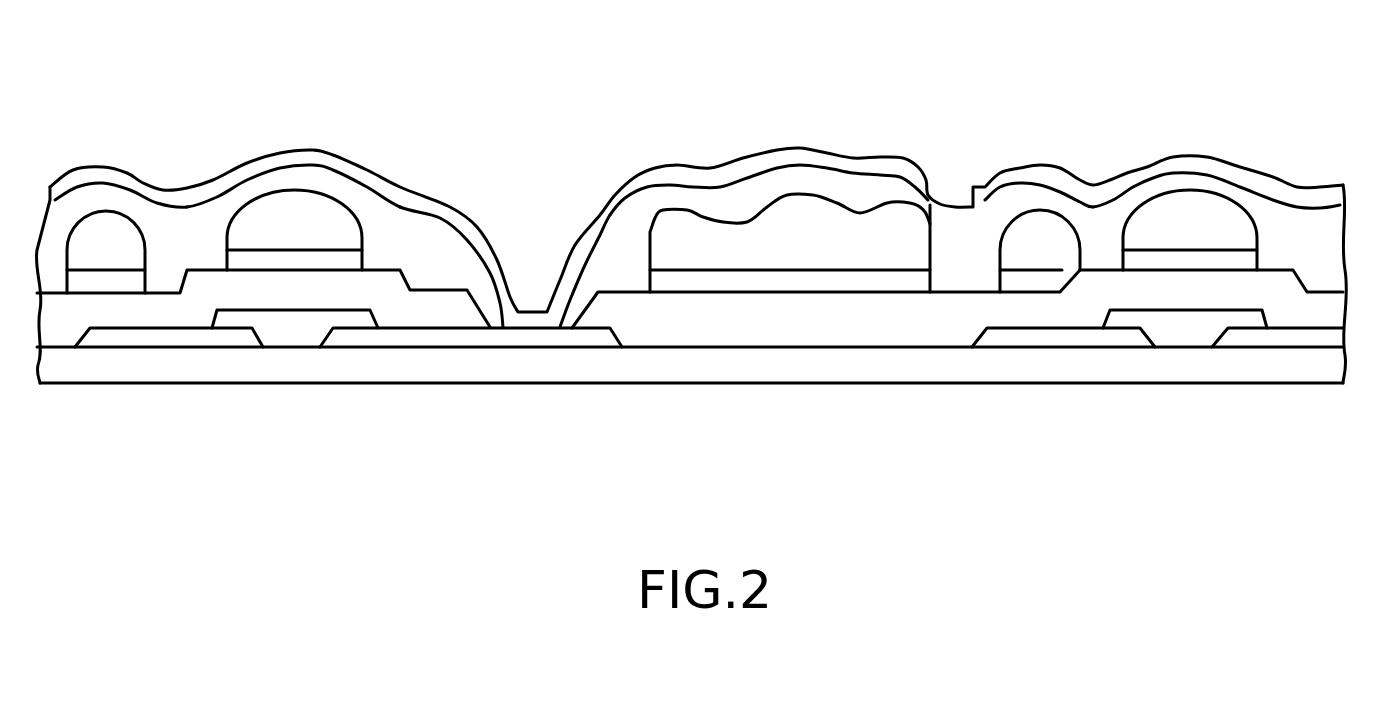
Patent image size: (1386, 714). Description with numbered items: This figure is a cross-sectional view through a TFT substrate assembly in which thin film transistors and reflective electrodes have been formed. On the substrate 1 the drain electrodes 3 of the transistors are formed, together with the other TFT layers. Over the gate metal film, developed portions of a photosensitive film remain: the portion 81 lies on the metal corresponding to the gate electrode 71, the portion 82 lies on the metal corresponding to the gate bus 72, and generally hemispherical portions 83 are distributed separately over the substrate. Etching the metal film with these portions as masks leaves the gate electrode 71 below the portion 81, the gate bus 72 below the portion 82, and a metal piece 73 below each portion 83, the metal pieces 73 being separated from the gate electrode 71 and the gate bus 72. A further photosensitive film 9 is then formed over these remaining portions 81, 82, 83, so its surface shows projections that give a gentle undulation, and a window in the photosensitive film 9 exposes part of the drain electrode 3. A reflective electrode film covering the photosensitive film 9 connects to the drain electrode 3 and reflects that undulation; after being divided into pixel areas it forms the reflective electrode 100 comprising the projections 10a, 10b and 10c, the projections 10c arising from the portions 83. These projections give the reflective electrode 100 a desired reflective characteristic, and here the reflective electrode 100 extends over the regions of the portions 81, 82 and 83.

The substrate 1 is at (617, 365).
The drain electrode 3 is at (533, 345).
The photosensitive film 9 is at (440, 250).
The projection 10a is at (350, 138).
The projection 10b is at (925, 125).
The projection 10c is at (150, 160).
The gate electrode 71 is at (335, 260).
The gate bus 72 is at (667, 277).
The metal piece 73 is at (127, 280).
The remaining portion of photosensitive film 81 is at (315, 227).
The remaining portion of photosensitive film 82 is at (703, 243).
The remaining portion of photosensitive film 83 is at (105, 240).
The reflective electrode 100 is at (593, 230).